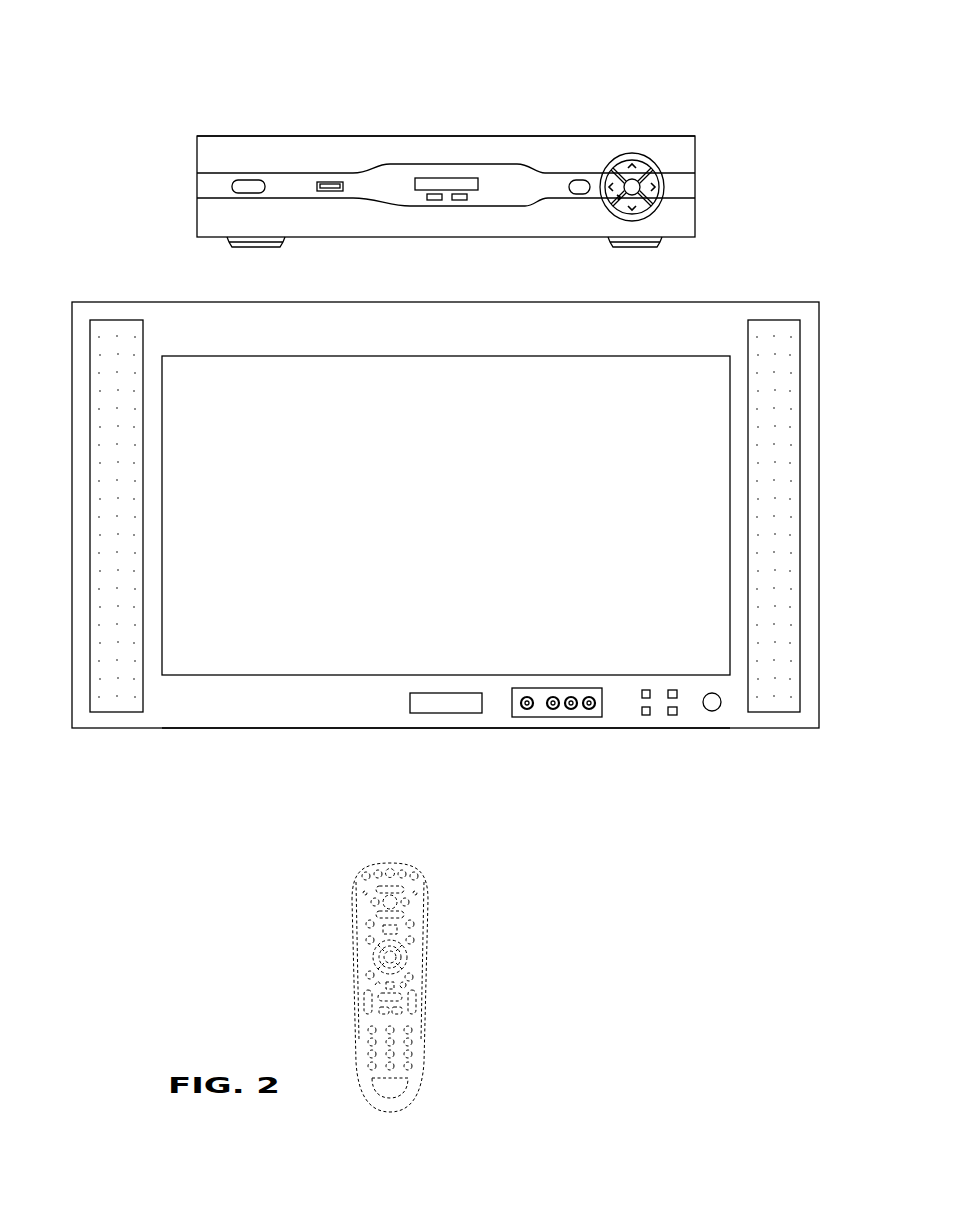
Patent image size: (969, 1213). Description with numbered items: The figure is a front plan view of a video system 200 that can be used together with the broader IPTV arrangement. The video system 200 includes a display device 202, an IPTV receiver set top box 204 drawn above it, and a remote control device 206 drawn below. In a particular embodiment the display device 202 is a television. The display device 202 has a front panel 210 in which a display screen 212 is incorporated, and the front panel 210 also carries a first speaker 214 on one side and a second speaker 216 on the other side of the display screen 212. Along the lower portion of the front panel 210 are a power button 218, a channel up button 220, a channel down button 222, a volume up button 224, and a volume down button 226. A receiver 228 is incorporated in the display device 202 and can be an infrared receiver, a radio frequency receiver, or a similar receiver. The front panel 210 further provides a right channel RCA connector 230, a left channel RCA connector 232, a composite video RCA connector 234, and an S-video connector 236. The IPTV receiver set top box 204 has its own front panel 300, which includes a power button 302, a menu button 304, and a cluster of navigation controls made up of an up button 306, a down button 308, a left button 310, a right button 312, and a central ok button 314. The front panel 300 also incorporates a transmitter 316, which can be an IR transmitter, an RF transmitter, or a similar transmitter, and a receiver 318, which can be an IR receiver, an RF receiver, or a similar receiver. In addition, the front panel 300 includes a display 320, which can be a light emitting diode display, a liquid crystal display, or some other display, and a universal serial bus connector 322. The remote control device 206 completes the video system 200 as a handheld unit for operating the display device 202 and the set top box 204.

The video system 200 is at (797, 127).
The display device 202 is at (445, 501).
The IPTV receiver set top box 204 is at (446, 138).
The remote control device 206 is at (458, 990).
The front panel 210 is at (436, 740).
The display screen 212 is at (446, 590).
The first speaker 214 is at (148, 596).
The second speaker 216 is at (803, 548).
The power button 218 is at (767, 754).
The channel up button 220 is at (743, 771).
The channel down button 222 is at (743, 792).
The volume up button 224 is at (580, 771).
The volume down button 226 is at (580, 792).
The receiver 228 is at (379, 734).
The right channel RCA connector 230 is at (531, 763).
The left channel RCA connector 232 is at (514, 751).
The composite video RCA connector 234 is at (493, 739).
The S-video connector 236 is at (465, 730).
The front panel 300 is at (391, 122).
The power button 302 is at (191, 169).
The menu button 304 is at (621, 126).
The up button 306 is at (672, 158).
The down button 308 is at (705, 223).
The left button 310 is at (669, 232).
The right button 312 is at (718, 164).
The ok button 314 is at (703, 188).
The transmitter 316 is at (384, 230).
The receiver 318 is at (513, 230).
The display 320 is at (400, 134).
The universal serial bus (USB) connector 322 is at (254, 136).